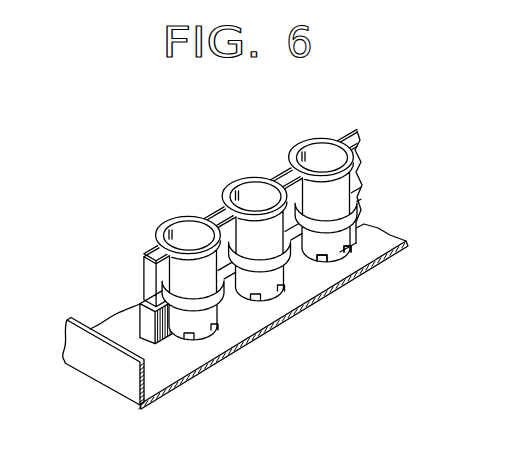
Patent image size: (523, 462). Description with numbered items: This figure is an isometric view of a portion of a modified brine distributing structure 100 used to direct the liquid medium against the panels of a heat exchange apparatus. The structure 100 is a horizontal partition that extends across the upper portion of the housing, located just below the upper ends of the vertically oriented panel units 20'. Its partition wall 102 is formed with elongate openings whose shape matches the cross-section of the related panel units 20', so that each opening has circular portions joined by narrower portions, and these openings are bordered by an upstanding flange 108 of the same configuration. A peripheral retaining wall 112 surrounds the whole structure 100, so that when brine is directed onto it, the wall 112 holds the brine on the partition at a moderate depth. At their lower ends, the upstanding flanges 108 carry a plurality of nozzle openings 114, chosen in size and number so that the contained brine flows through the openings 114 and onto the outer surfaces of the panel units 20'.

The brine distributing structure 100 is at (247, 278).
The partition wall 102 is at (197, 360).
The upstanding flange 108 is at (348, 229).
The peripheral retaining wall 112 is at (84, 360).
The nozzle openings 114 is at (350, 252).
The panel unit 20' is at (190, 256).